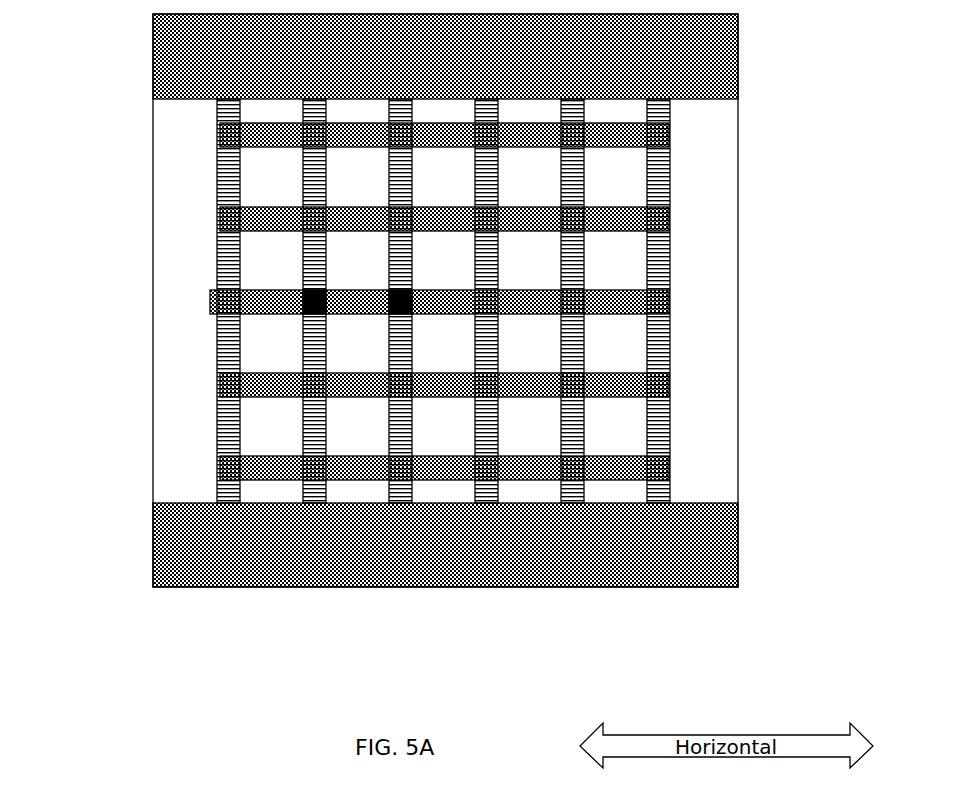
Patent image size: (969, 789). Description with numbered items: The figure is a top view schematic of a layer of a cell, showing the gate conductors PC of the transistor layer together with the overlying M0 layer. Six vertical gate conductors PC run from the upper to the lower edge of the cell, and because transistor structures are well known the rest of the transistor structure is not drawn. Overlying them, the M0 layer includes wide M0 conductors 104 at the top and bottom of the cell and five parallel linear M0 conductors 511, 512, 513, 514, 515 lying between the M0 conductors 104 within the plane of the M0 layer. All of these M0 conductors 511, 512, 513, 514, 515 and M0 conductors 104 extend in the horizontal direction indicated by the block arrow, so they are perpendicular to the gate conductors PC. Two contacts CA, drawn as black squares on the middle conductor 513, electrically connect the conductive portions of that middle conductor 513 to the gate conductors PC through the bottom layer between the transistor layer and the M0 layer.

The M0 conductors 104 is at (738, 57).
The gate conductors PC is at (647, 167).
The M0 conductor 511 is at (220, 133).
The M0 conductor 512 is at (220, 217).
The middle conductor 513 is at (210, 300).
The M0 conductor 514 is at (220, 383).
The M0 conductor 515 is at (220, 466).
The contacts CA is at (328, 298).